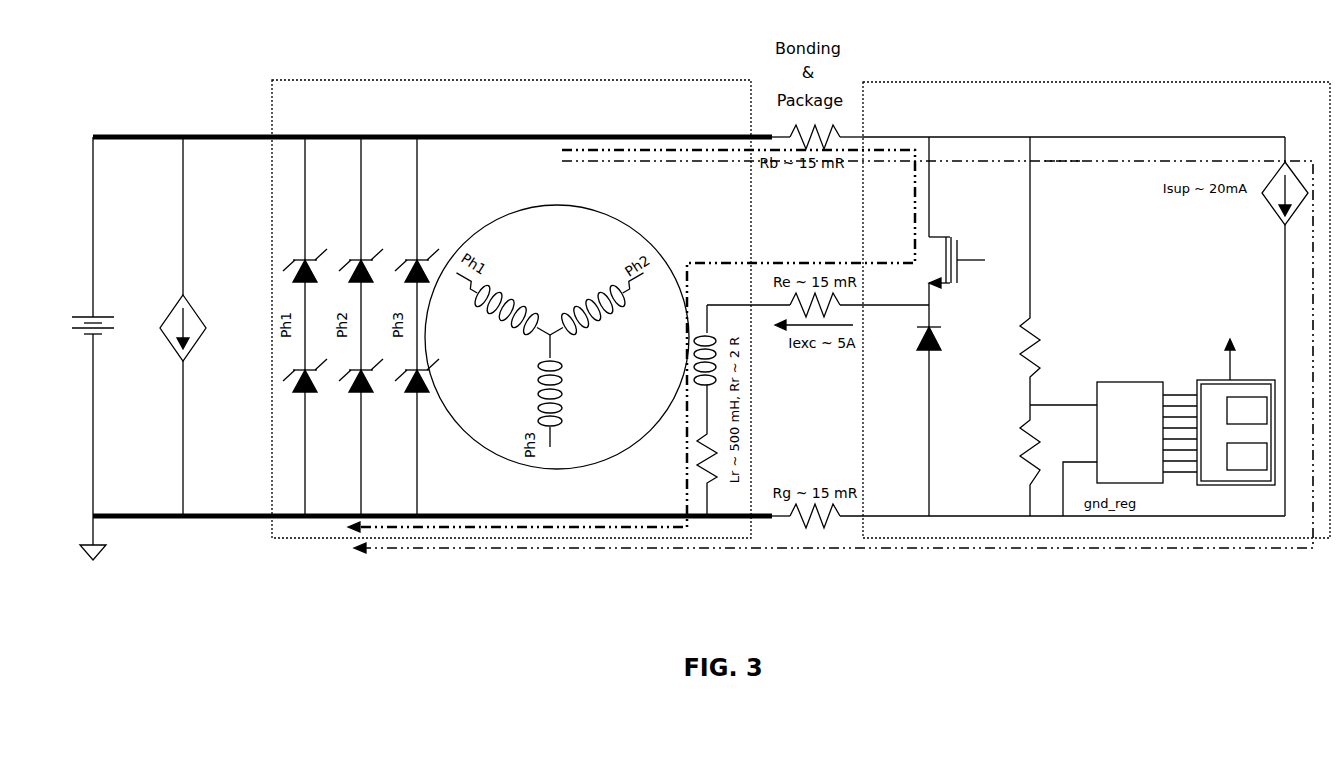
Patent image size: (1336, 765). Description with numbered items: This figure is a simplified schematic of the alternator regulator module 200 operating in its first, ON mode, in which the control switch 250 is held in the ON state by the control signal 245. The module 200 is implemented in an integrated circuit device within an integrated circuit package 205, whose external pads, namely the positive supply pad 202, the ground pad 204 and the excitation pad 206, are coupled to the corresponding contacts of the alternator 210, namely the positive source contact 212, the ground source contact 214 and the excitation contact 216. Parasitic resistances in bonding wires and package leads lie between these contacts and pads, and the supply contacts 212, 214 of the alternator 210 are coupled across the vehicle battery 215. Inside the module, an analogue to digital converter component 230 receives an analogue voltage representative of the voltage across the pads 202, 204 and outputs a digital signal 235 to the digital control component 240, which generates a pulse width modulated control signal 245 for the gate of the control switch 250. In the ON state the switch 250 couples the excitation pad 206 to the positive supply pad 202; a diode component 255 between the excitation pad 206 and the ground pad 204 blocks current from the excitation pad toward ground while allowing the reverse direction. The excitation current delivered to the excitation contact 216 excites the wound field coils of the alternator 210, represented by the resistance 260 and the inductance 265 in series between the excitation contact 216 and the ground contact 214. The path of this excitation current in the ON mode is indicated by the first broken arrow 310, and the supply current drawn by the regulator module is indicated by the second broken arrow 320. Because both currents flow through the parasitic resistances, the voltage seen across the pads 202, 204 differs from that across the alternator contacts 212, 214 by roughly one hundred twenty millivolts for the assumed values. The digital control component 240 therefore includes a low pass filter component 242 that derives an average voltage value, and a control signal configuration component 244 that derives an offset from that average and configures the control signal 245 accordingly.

The alternator regulator module 200 is at (1225, 64).
The positive supply pad 202 is at (857, 136).
The ground pad 204 is at (856, 520).
The integrated circuit package 205 is at (1299, 80).
The excitation pad 206 is at (858, 308).
The alternator 210 is at (411, 42).
The positive source contact 212 is at (758, 136).
The ground source contact 214 is at (752, 520).
The vehicle battery 215 is at (104, 308).
The excitation contact 216 is at (755, 308).
The analogue to digital converter component 230 is at (1129, 380).
The digital signal 235 is at (1178, 392).
The digital control component 240 is at (1236, 402).
The low pass filter component 242 is at (1247, 456).
The control signal configuration component 244 is at (1247, 410).
The control signal 245 is at (970, 262).
The control switch 250 is at (946, 236).
The diode component 255 is at (943, 336).
The resistance Rr 260 is at (696, 352).
The inductance Lr 265 is at (696, 478).
The excitation current 310 is at (718, 262).
The supply current 320 is at (1060, 164).